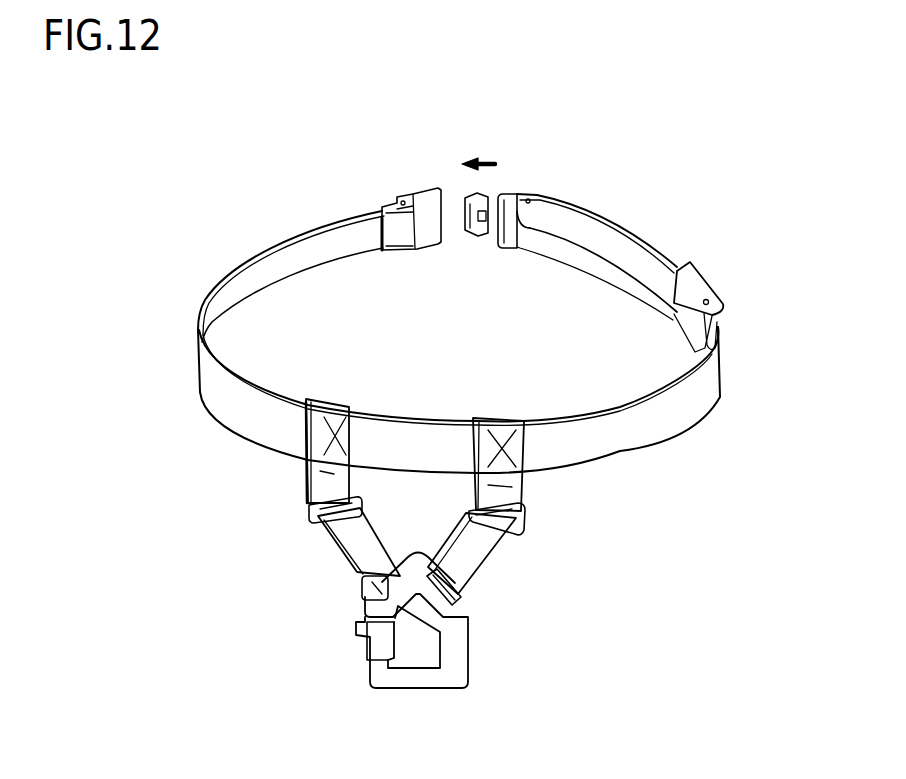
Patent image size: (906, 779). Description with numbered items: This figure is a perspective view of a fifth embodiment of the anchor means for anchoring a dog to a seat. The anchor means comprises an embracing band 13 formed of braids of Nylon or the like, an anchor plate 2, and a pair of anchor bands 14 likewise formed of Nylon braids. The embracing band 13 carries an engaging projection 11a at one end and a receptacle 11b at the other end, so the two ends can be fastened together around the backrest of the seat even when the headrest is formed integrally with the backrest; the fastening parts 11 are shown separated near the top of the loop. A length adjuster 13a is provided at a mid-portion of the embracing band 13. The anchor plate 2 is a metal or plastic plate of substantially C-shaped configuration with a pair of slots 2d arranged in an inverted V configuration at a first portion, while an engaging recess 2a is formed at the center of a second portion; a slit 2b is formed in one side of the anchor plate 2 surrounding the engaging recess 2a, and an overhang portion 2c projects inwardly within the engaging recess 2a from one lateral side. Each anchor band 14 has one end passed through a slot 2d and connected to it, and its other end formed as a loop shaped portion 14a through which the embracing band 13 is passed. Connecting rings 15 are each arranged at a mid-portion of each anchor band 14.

The anchor plate 2 is at (407, 641).
The engaging recess 2a is at (420, 652).
The slit 2b is at (367, 618).
The overhang portion 2c is at (392, 643).
The slots 2d is at (372, 577).
The locking pin 11 is at (474, 237).
The engaging projection 11a is at (516, 196).
The receptacle 11b is at (410, 200).
The embracing band 13 is at (270, 257).
The length adjuster 13a is at (700, 285).
The anchor bands 14 is at (357, 543).
The loop shaped portion 14a is at (335, 417).
The connecting rings 15 is at (307, 508).